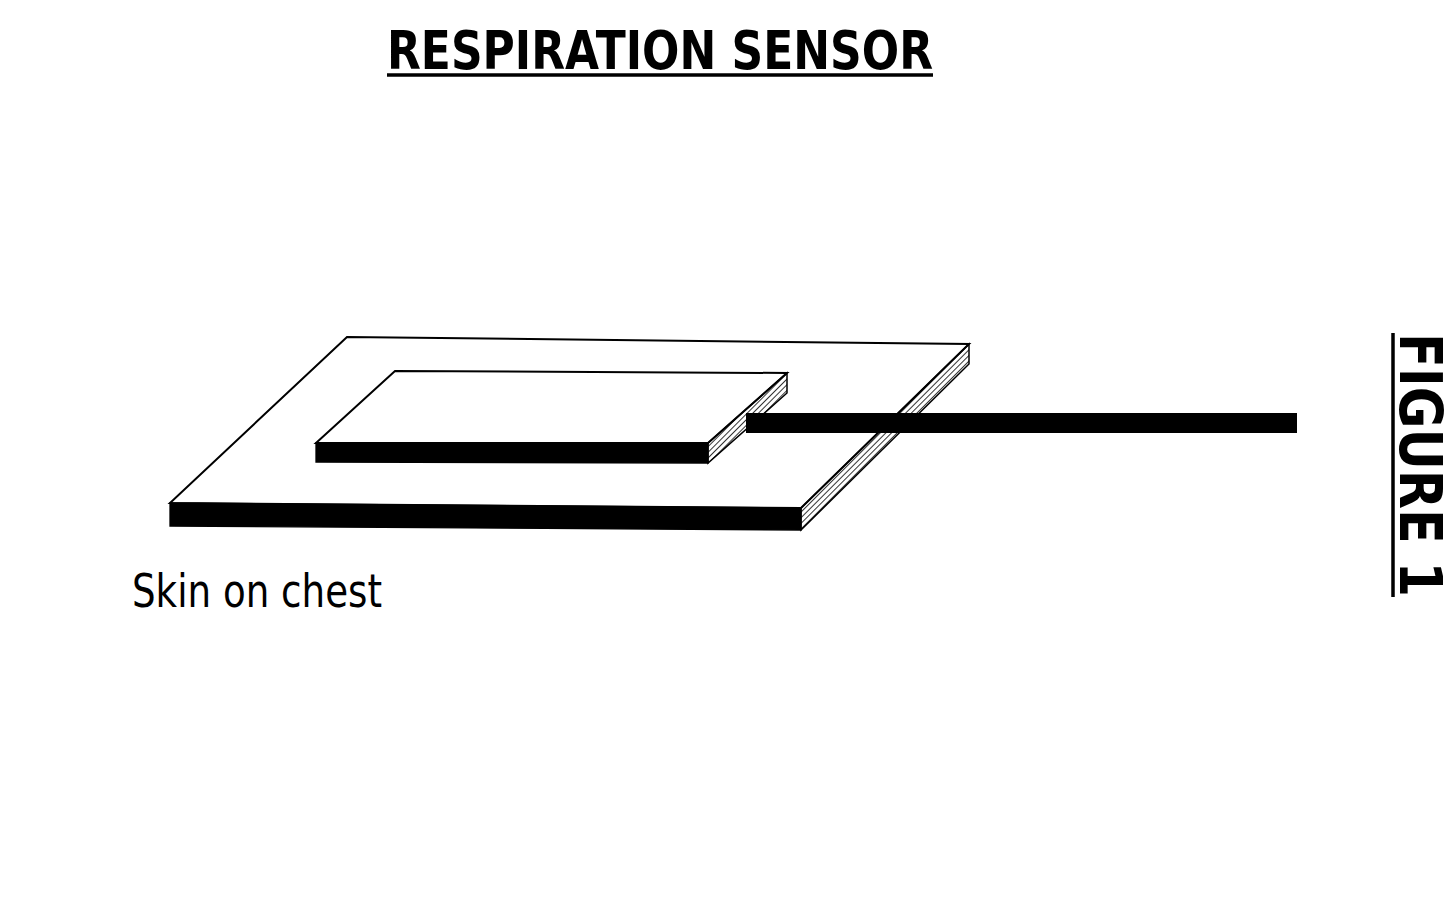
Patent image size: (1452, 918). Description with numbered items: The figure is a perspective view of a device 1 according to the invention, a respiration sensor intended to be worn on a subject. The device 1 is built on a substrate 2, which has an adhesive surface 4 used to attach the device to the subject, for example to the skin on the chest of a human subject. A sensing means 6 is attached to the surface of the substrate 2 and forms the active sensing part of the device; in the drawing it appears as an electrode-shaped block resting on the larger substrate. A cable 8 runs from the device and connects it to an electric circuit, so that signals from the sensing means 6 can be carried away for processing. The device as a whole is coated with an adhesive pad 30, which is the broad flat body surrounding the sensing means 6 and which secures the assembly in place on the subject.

The device 1 is at (568, 300).
The substrate 2 is at (637, 349).
The adhesive surface 4 is at (785, 327).
The sensing means 6 is at (449, 393).
The cable 8 is at (1052, 400).
The adhesive pad 30 is at (935, 327).